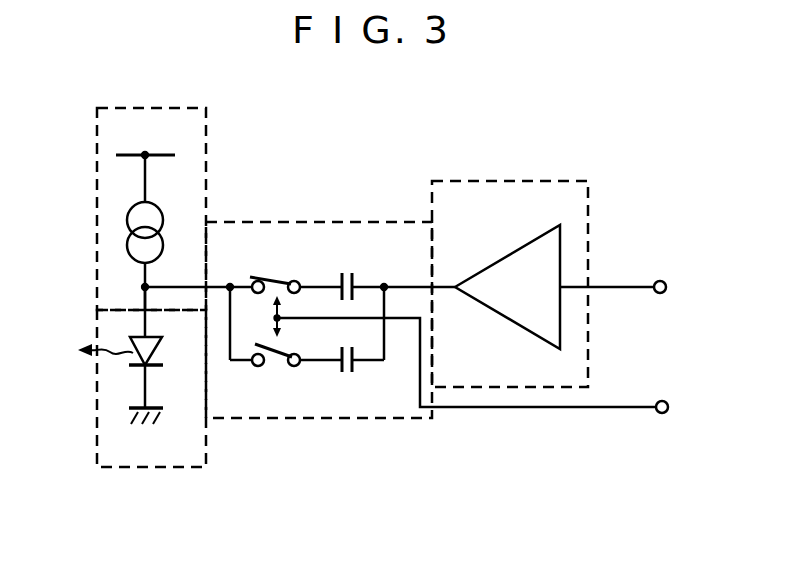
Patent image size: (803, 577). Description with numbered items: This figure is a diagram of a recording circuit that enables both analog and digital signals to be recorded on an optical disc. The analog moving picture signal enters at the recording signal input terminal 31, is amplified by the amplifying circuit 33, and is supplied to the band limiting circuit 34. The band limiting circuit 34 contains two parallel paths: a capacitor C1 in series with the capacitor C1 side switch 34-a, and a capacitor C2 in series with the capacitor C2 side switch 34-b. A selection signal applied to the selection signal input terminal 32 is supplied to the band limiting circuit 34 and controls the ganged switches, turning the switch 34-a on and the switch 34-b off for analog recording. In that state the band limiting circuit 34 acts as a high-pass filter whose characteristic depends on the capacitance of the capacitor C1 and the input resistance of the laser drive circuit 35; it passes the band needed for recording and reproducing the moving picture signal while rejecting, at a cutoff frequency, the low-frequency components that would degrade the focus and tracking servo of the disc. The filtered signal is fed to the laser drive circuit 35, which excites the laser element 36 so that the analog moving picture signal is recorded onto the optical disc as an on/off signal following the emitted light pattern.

The recording signal input terminal 31 is at (664, 281).
The selection signal input terminal 32 is at (667, 401).
The amplifying circuit 33 is at (588, 190).
The band limiting circuit 34 is at (338, 222).
The capacitor C1 side switch 34-a is at (273, 267).
The capacitor C2 side switch 34-b is at (270, 346).
The laser drive circuit 35 is at (206, 131).
The laser element 36 is at (107, 468).
The capacitor C1 is at (349, 271).
The capacitor C2 is at (342, 349).